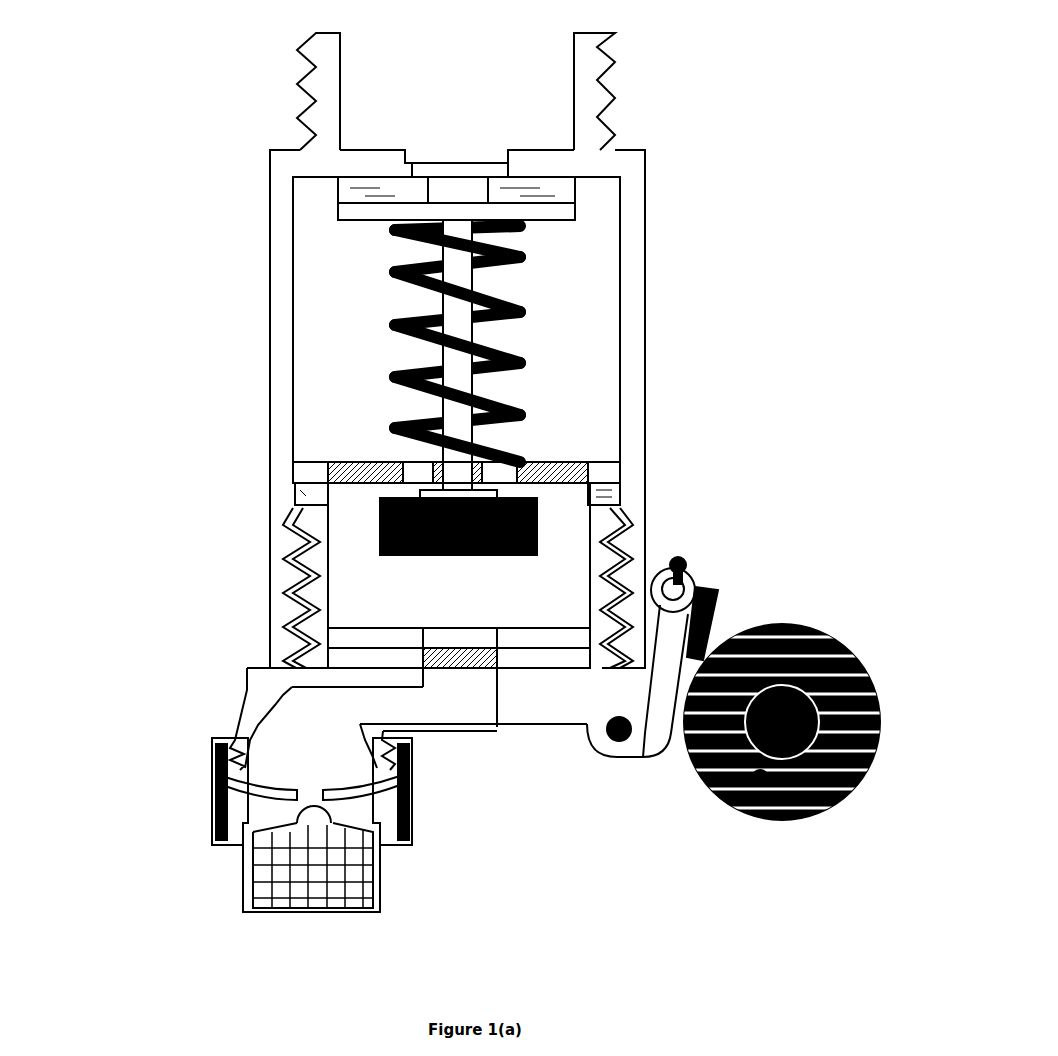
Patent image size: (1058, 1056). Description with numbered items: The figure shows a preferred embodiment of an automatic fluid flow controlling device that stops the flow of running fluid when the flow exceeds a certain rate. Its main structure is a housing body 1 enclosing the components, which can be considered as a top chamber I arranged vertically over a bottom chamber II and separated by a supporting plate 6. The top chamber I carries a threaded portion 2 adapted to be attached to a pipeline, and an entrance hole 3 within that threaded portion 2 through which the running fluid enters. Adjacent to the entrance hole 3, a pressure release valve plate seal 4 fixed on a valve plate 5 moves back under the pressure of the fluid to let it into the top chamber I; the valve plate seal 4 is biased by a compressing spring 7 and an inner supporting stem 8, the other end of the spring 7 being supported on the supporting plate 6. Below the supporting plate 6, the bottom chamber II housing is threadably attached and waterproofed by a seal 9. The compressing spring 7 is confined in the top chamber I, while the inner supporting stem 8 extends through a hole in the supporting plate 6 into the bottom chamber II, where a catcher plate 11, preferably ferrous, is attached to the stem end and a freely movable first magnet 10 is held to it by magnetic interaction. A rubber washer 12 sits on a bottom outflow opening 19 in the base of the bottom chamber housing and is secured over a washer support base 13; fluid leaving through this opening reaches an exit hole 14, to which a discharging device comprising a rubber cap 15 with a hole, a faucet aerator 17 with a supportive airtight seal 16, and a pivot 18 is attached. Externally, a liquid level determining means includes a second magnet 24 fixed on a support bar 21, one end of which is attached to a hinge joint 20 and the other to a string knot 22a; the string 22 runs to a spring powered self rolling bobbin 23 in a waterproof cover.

The housing body 1 is at (270, 264).
The threaded portion 2 is at (612, 41).
The entrance hole 3 is at (460, 148).
The pressure release valve plate seal 4 is at (578, 190).
The valve plate 5 is at (578, 214).
The supporting plate 6 is at (400, 462).
The compressing spring 7 is at (530, 312).
The inner supporting stem 8 is at (492, 383).
The seal 9 is at (295, 497).
The first magnet 10 is at (380, 541).
The catcher plate 11 is at (540, 509).
The rubber washer 12 is at (325, 637).
The washer support base 13 is at (380, 678).
The exit hole 14 is at (310, 754).
The rubber cap 15 is at (262, 800).
The supportive airtight seal 16 is at (212, 845).
The faucet aerator 17 is at (315, 878).
The pivot 18 is at (334, 819).
The bottom outflow opening 19 is at (472, 662).
The hinge joint 20 is at (619, 745).
The support bar 21 is at (667, 682).
The string 22 is at (760, 778).
The string knot 22a is at (690, 565).
The spring powered self rolling bobbin 23 is at (832, 808).
The second magnet 24 is at (720, 603).
The top chamber I is at (355, 293).
The bottom chamber II is at (370, 590).